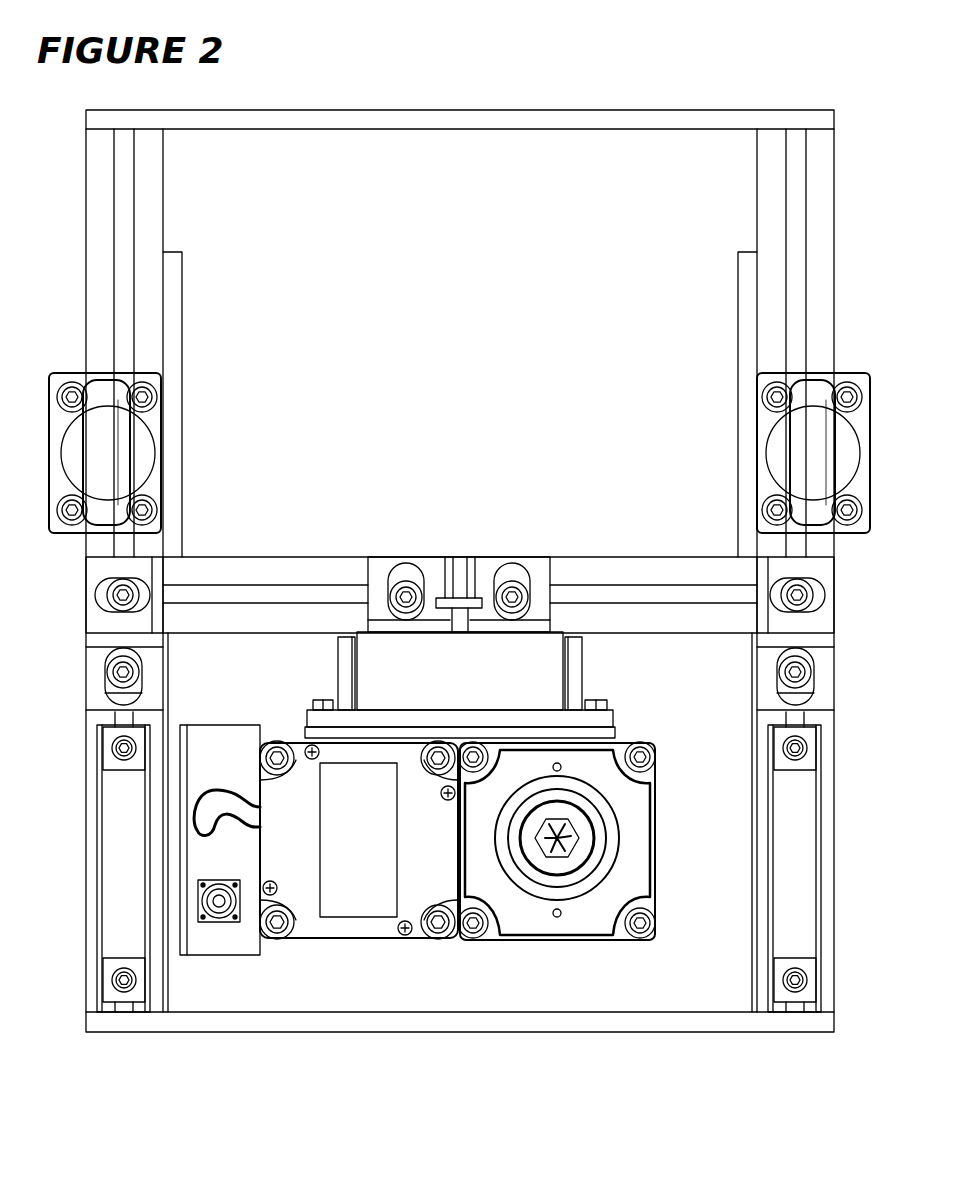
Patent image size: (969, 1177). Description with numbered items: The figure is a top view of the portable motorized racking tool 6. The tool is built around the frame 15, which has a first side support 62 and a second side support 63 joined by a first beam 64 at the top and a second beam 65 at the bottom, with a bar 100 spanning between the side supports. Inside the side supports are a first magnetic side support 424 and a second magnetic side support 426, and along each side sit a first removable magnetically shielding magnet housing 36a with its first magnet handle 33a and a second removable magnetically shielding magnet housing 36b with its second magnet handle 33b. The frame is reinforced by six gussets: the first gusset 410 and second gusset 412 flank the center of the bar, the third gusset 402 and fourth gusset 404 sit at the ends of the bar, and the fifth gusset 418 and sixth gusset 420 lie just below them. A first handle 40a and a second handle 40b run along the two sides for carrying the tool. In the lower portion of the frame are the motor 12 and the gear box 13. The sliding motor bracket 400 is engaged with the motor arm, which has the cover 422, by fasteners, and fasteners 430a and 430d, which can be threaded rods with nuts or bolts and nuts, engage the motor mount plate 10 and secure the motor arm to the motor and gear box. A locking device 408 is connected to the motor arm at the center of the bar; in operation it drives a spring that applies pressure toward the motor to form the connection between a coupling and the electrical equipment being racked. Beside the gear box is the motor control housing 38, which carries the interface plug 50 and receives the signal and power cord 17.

The portable motorized racking tool 6 is at (114, 1074).
The motor mount plate 10 is at (612, 735).
The motor 12 is at (355, 938).
The gear box 13 is at (558, 938).
The frame 15 is at (838, 1036).
The signal and power cord 17 is at (225, 795).
The first magnet handle 33a is at (120, 458).
The second magnet handle 33b is at (800, 458).
The first removable magnetically shielding magnet housing 36a is at (60, 373).
The second removable magnetically shielding magnet housing 36b is at (862, 373).
The motor control housing 38 is at (215, 725).
The first handle 40a is at (112, 878).
The second handle 40b is at (808, 878).
The interface plug 50 is at (220, 925).
The first side support 62 is at (86, 195).
The second side support 63 is at (834, 195).
The first beam 64 is at (461, 110).
The second beam 65 is at (455, 1032).
The bar 100 is at (640, 556).
The sliding motor bracket 400 is at (580, 670).
The third gusset 402 is at (92, 570).
The fourth gusset 404 is at (826, 570).
The locking device 408 is at (460, 598).
The first gusset 410 is at (382, 562).
The second gusset 412 is at (540, 562).
The fifth gusset 418 is at (92, 670).
The sixth gusset 420 is at (825, 670).
The cover 422 is at (372, 663).
The first magnetic side support 424 is at (182, 275).
The second magnetic side support 426 is at (738, 275).
The fastener 430a is at (310, 705).
The fastener 430d is at (608, 705).